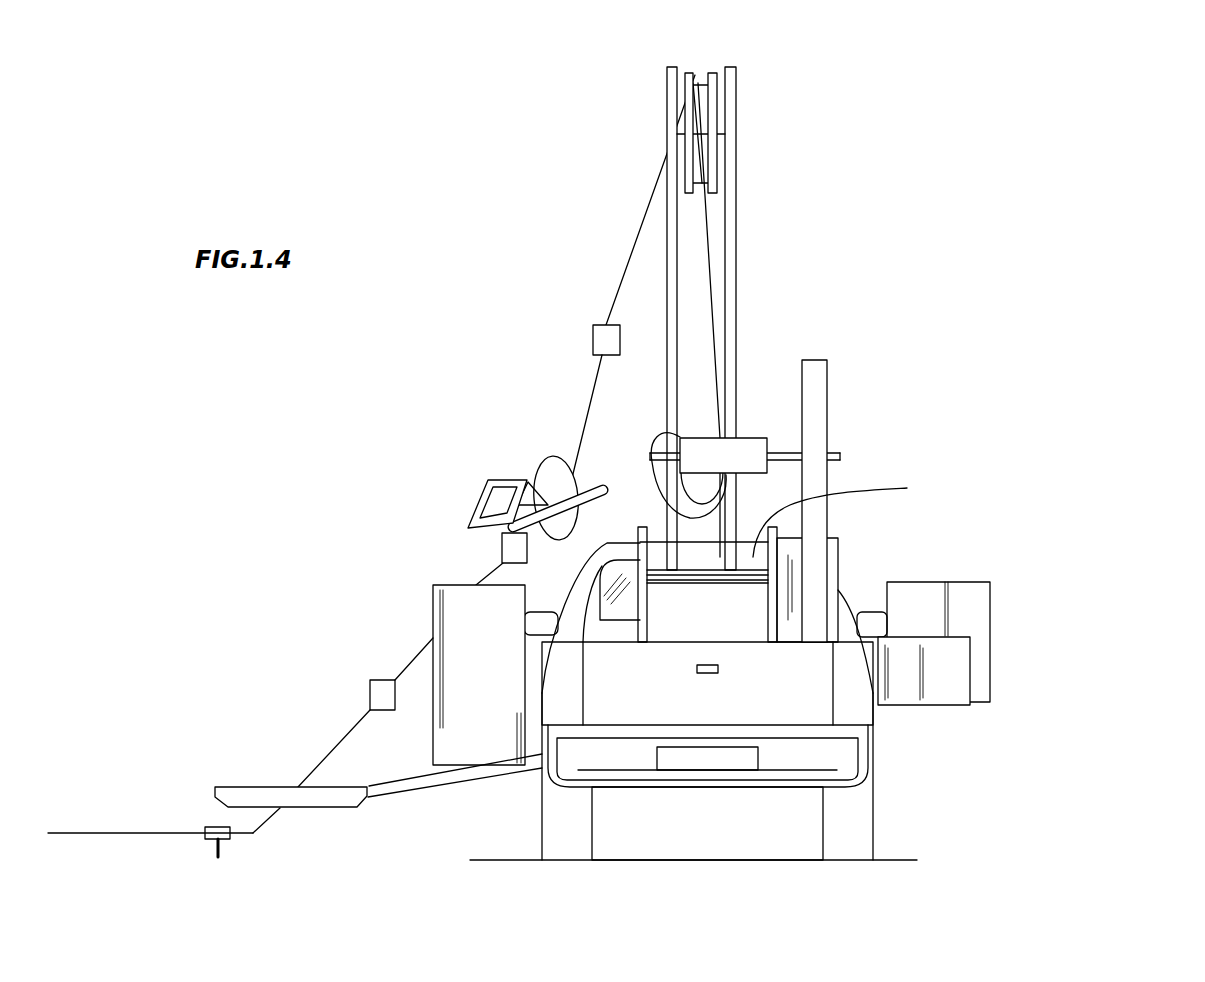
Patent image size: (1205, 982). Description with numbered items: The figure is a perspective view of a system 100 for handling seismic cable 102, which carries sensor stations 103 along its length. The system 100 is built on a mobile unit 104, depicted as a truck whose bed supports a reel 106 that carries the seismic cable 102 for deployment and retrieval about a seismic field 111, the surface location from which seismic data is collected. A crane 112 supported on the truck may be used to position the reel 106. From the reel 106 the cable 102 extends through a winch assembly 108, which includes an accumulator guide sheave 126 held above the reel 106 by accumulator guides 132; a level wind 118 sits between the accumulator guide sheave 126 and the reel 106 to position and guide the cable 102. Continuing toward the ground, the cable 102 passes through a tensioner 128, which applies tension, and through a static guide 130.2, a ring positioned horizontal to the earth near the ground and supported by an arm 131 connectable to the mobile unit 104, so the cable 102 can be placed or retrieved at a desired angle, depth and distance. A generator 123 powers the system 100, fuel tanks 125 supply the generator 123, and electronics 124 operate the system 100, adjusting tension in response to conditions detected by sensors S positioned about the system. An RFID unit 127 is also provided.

The system 100 is at (1058, 280).
The seismic cable 102 is at (330, 745).
The sensor stations 103 is at (593, 335).
The mobile unit 104 is at (873, 770).
The reel 106 is at (855, 510).
The winch assembly 108 is at (465, 430).
The seismic field 111 is at (90, 833).
The crane 112 is at (827, 395).
The level wind 118 is at (750, 438).
The generator 123 is at (963, 597).
The electronics 124 is at (433, 608).
The fuel tanks 125 is at (948, 672).
The accumulator guide sheave 126 is at (700, 73).
The RFID unit 127 is at (482, 497).
The tensioner 128 is at (565, 458).
The static guide 130.2 is at (283, 810).
The arm 131 is at (450, 795).
The accumulator guides 132 is at (737, 240).
The sensors S is at (502, 548).